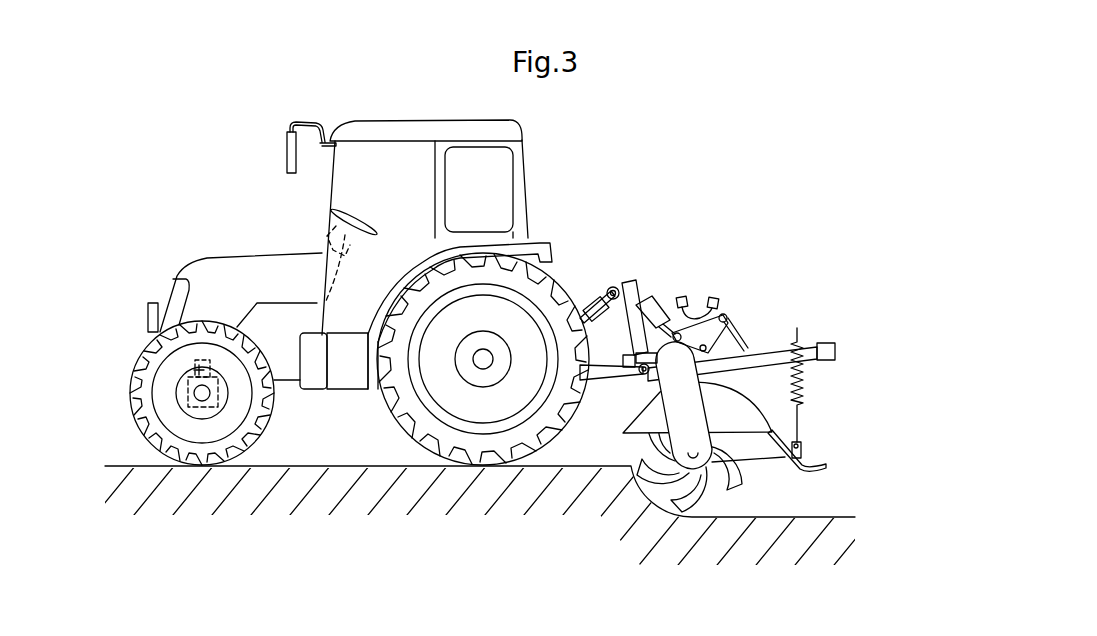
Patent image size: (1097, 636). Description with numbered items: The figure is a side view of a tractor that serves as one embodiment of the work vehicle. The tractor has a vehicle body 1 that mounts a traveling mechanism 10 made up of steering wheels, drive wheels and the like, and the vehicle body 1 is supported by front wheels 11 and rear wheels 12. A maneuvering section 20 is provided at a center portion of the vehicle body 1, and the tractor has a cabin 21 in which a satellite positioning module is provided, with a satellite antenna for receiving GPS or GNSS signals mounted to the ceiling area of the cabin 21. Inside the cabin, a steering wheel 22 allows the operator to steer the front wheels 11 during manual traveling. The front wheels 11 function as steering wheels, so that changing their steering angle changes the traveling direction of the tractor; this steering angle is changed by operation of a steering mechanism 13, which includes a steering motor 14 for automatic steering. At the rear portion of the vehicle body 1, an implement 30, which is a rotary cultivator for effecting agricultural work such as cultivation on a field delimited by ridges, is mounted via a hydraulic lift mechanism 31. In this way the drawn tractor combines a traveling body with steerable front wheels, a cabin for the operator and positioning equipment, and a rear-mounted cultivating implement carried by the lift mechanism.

The vehicle body 1 is at (320, 412).
The traveling mechanism 10 is at (374, 420).
The front wheels 11 is at (196, 463).
The rear wheels 12 is at (492, 470).
The steering mechanism 13 is at (188, 395).
The steering motor 14 is at (195, 365).
The maneuvering section 20 is at (385, 212).
The cabin 21 is at (505, 130).
The steering wheel 22 is at (352, 230).
The implement 30 is at (699, 514).
The hydraulic lift mechanism 31 is at (656, 276).